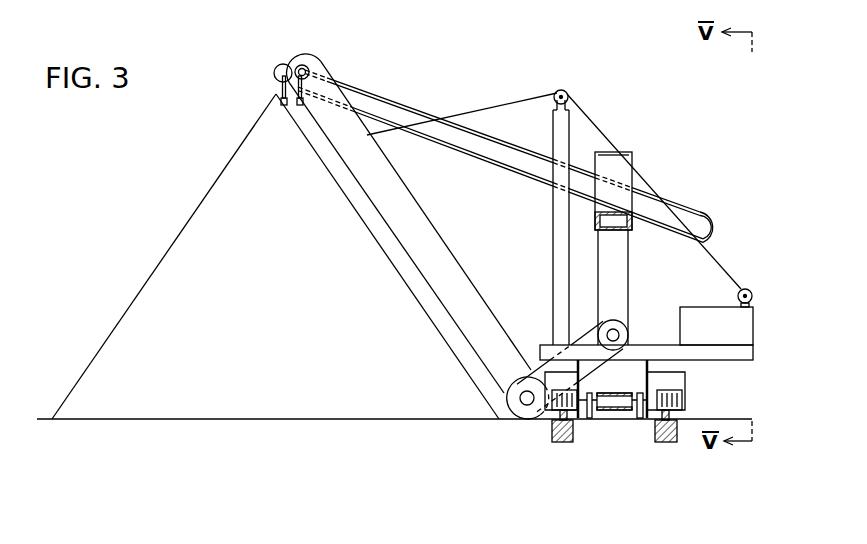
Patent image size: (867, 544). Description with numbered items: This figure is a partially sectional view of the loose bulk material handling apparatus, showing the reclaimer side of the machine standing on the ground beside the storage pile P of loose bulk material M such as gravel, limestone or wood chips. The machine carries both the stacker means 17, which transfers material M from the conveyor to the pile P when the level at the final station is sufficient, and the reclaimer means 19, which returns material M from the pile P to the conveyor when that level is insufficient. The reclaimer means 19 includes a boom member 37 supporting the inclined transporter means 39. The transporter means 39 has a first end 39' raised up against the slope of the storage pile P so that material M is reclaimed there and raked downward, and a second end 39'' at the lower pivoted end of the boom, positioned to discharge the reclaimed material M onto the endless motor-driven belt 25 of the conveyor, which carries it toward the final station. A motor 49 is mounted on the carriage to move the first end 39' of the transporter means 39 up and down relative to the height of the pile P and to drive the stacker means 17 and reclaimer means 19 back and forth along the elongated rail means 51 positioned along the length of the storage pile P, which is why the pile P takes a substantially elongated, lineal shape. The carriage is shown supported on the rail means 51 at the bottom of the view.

The stacker means 17 is at (405, 123).
The reclaimer means 19 is at (436, 176).
The endless motor-driven belt 25 is at (613, 413).
The boom member 37 is at (438, 224).
The transporter means 39 is at (409, 212).
The first end of the transporter means 39' is at (317, 59).
The second end of the transporter means 39'' is at (488, 427).
The motor 49 is at (744, 325).
The elongated rail means 51 is at (553, 436).
The loose bulk material M is at (250, 167).
The storage pile P is at (172, 265).